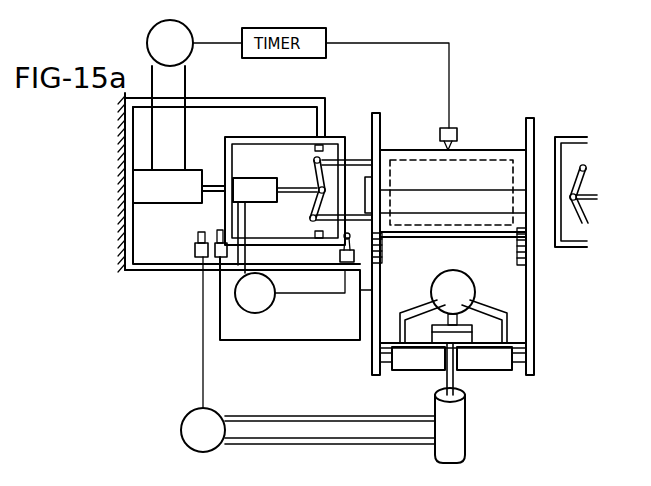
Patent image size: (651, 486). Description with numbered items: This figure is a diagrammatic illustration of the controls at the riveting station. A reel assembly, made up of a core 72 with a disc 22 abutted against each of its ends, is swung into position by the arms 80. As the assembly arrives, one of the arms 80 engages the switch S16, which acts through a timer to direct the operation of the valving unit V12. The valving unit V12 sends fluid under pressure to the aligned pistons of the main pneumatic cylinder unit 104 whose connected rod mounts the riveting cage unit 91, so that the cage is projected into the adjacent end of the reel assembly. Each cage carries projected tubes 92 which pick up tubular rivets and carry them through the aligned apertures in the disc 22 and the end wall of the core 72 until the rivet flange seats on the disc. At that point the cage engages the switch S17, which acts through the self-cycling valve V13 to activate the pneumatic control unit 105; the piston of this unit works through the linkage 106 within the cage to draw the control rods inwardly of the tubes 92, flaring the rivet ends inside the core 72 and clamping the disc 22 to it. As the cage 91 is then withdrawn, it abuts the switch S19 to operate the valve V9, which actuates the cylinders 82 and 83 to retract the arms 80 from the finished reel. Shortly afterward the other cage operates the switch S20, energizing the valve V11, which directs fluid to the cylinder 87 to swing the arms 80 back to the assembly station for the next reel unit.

The disc 22 is at (384, 115).
The core 72 is at (466, 190).
The arms 80 is at (375, 280).
The cylinder 82 is at (497, 371).
The cylinder 83 is at (410, 371).
The cylinder 87 is at (466, 438).
The riveting cage unit 91 is at (226, 146).
The projected tube 92 is at (362, 160).
The main pneumatic cylinder unit 104 is at (190, 197).
The pneumatic control unit 105 is at (262, 172).
The linkage 106 is at (311, 207).
The switch S16 is at (450, 128).
The switch S17 is at (343, 262).
The switch S19 is at (216, 235).
The switch S20 is at (195, 248).
The valve V9 is at (453, 306).
The valve V11 is at (308, 354).
The valving unit V12 is at (194, 95).
The self-cycling valve V13 is at (290, 291).